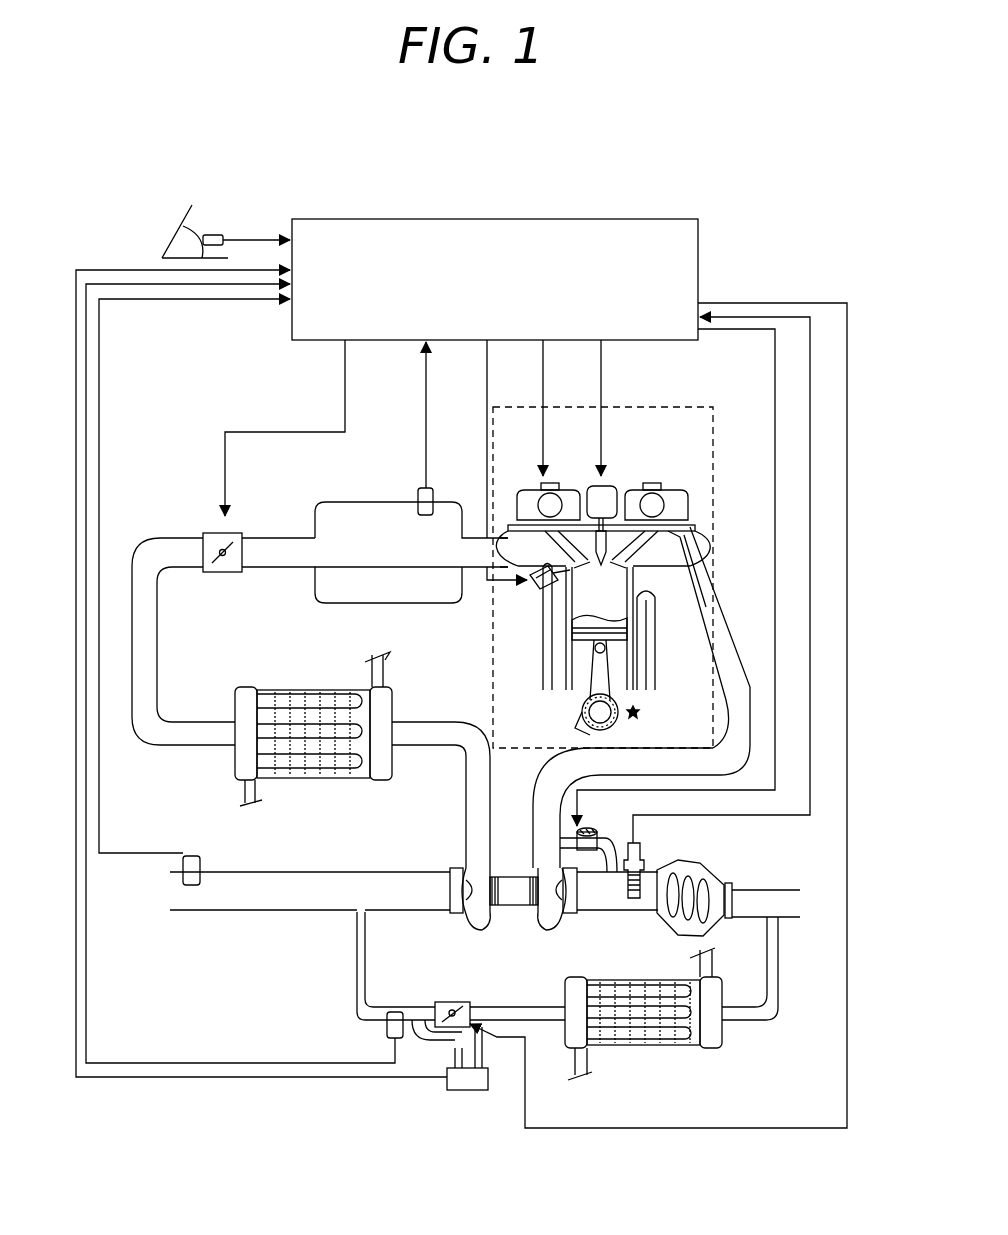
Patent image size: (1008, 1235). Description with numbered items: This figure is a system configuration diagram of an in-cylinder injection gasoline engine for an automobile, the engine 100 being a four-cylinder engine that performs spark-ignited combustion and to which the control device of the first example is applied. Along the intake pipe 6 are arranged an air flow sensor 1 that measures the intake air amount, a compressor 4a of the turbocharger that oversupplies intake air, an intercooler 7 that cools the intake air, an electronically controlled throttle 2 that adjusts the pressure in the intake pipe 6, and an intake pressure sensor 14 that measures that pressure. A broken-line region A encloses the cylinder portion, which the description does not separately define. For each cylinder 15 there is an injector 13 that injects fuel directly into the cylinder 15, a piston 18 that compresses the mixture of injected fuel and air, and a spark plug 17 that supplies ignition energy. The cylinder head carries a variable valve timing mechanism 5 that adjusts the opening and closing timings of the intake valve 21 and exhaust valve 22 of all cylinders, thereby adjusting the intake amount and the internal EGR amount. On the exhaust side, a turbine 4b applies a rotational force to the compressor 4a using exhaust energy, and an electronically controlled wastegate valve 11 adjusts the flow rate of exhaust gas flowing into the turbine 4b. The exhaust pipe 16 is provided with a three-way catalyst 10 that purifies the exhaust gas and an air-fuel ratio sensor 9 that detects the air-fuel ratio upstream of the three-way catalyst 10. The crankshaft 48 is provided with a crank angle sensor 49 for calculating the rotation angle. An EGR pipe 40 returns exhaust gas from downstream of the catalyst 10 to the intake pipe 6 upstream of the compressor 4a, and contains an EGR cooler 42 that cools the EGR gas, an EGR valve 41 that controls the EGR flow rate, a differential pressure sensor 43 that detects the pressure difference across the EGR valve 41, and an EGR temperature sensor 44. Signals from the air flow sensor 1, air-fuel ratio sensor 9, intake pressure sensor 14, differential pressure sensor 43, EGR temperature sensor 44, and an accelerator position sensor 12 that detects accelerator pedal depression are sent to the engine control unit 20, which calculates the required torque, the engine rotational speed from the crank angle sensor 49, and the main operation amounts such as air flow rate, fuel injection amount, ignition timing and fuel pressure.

The air flow sensor 1 is at (200, 870).
The electronically controlled throttle 2 is at (220, 572).
The compressor 4a is at (477, 923).
The turbine 4b is at (547, 923).
The variable valve timing mechanism 5 is at (552, 482).
The intake pipe 6 is at (408, 578).
The intercooler 7 is at (302, 688).
The air-fuel ratio sensor 9 is at (628, 845).
The three-way catalyst 10 is at (713, 878).
The electronically controlled wastegate valve 11 is at (590, 827).
The accelerator position sensor 12 is at (215, 233).
The fuel injection device (injector) 13 is at (545, 590).
The intake pressure sensor 14 is at (422, 490).
The cylinder 15 is at (653, 603).
The exhaust pipe 16 is at (707, 588).
The spark plug 17 is at (617, 497).
The piston 18 is at (583, 645).
The engine control unit (ECU) 20 is at (590, 228).
The intake valve 21 is at (497, 487).
The exhaust valve 22 is at (683, 497).
The EGR pipe 40 is at (357, 962).
The EGR valve 41 is at (455, 1005).
The EGR cooler 42 is at (683, 1050).
The differential pressure sensor 43 is at (460, 1077).
The EGR temperature sensor 44 is at (387, 1025).
The crankshaft 48 is at (578, 720).
The crank angle sensor 49 is at (640, 712).
The engine 100 is at (232, 1132).
The engine A is at (660, 408).